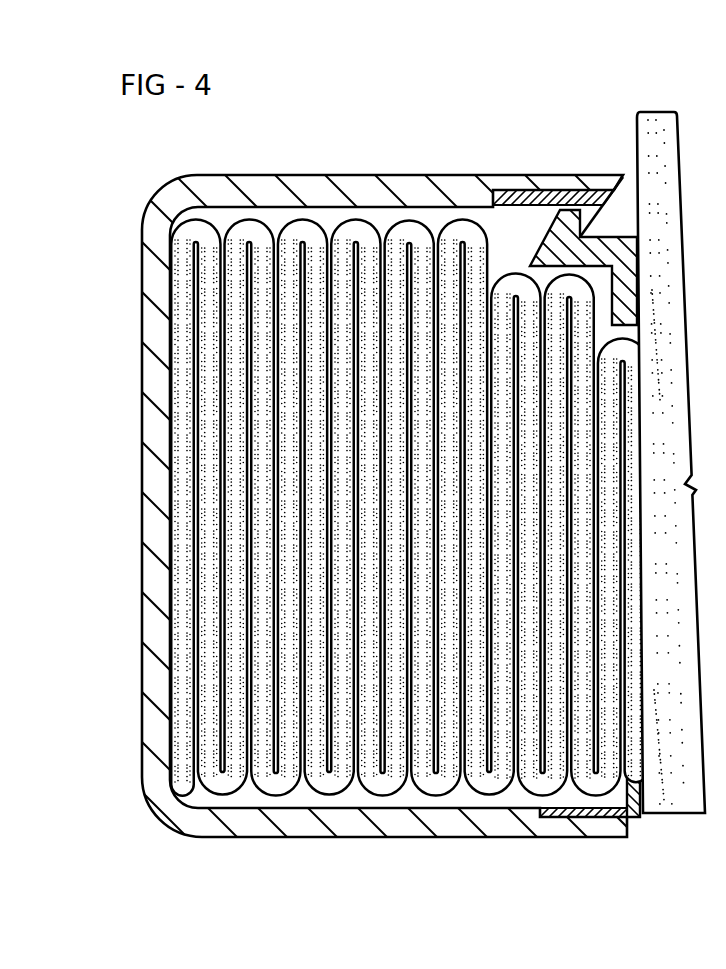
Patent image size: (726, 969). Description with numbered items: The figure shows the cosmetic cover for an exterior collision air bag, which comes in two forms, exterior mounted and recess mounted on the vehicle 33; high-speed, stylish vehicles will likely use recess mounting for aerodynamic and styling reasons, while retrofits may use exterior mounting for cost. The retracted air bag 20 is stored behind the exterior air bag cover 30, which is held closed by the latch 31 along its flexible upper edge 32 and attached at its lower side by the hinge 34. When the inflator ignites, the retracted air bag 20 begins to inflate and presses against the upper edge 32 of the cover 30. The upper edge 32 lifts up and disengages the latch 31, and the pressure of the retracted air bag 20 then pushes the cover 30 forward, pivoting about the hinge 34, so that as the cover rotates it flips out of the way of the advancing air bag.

The retracted air bag 20 is at (185, 518).
The exterior air bag cover 30 is at (153, 407).
The latch for exterior air bag cover 31 is at (645, 236).
The flexible upper edge 32 is at (372, 190).
The vehicle 33 is at (678, 562).
The hinge 34 is at (637, 817).